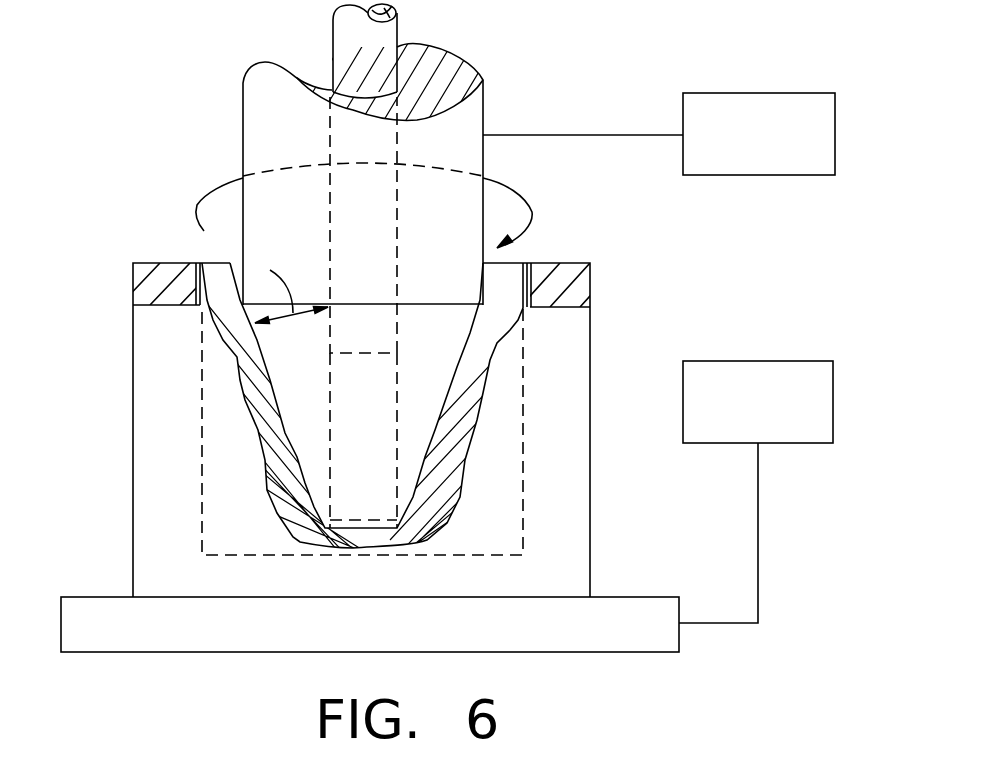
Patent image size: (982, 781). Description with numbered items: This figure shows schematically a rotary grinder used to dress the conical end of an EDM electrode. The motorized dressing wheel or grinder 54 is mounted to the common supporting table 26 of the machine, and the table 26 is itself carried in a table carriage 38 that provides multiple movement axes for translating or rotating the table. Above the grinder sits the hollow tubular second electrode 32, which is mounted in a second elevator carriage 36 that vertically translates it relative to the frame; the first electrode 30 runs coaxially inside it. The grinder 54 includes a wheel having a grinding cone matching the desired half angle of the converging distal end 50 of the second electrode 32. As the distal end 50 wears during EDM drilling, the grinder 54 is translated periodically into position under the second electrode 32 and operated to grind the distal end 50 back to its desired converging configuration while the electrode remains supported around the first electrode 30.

The table 26 is at (100, 597).
The first electrode 30 is at (333, 24).
The second electrode 32 is at (243, 113).
The second elevator carriage 36 is at (758, 93).
The table carriage 38 is at (758, 361).
The distal end 50 is at (383, 451).
The grinder 54 is at (133, 416).